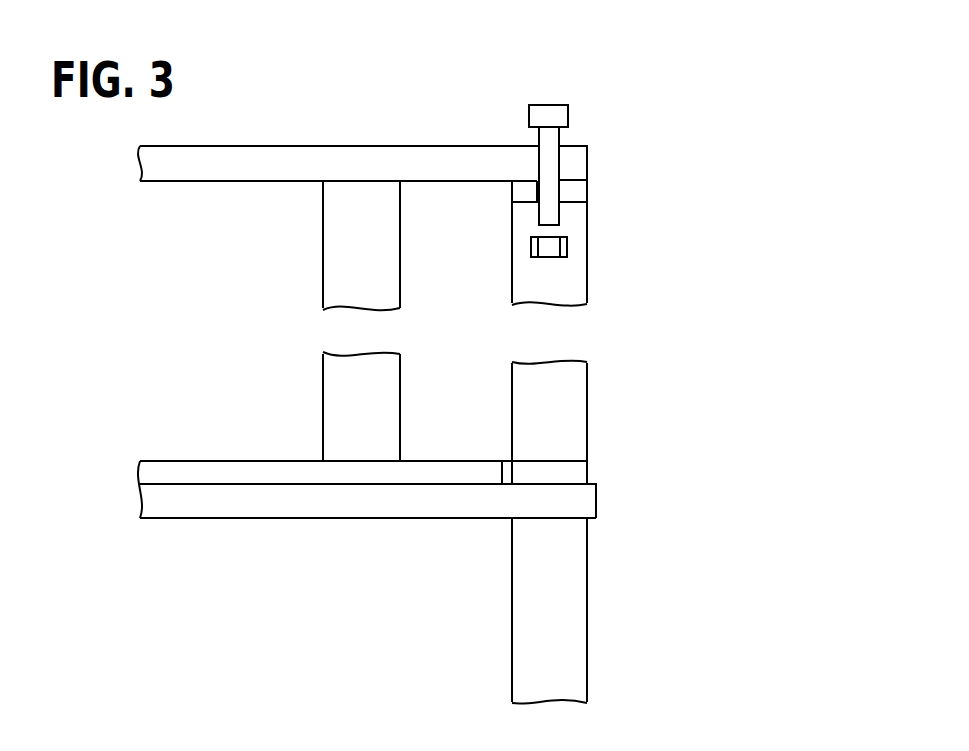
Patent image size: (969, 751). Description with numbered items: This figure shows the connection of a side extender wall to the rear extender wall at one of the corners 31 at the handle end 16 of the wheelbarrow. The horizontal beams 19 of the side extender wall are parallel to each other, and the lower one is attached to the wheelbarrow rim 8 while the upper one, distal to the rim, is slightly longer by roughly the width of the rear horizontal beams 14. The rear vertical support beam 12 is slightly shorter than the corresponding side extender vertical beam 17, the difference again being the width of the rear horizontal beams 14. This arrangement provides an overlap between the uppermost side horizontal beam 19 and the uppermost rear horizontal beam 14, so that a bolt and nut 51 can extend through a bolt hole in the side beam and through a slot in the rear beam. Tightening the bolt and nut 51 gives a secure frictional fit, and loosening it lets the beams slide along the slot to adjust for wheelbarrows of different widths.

The wheelbarrow rim 8 is at (598, 502).
The rear vertical support beam 12 is at (564, 272).
The rear horizontal beam 14 is at (588, 192).
The handle end 16 is at (589, 608).
The side extender vertical beam 17 is at (350, 248).
The side horizontal beam 19 is at (210, 173).
The corner 31 is at (593, 155).
The bolt and nut 51 is at (570, 100).